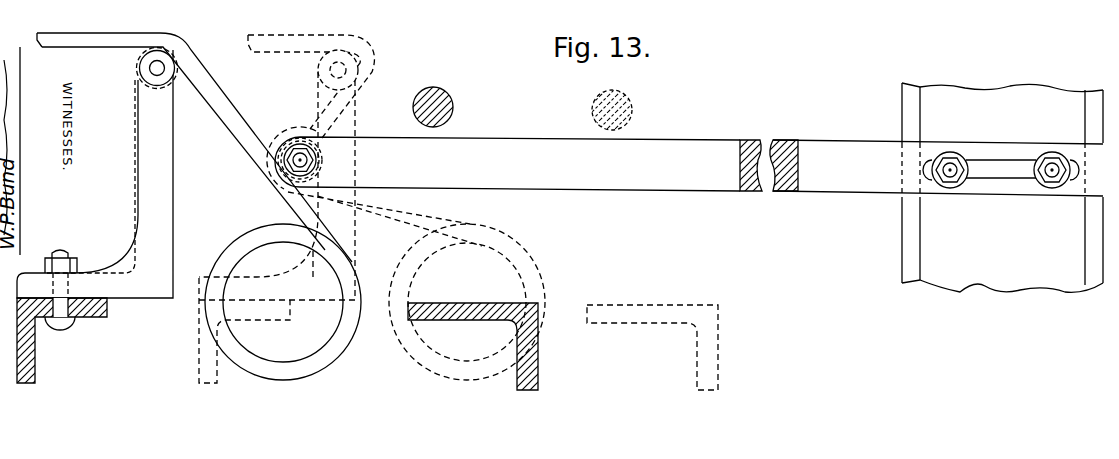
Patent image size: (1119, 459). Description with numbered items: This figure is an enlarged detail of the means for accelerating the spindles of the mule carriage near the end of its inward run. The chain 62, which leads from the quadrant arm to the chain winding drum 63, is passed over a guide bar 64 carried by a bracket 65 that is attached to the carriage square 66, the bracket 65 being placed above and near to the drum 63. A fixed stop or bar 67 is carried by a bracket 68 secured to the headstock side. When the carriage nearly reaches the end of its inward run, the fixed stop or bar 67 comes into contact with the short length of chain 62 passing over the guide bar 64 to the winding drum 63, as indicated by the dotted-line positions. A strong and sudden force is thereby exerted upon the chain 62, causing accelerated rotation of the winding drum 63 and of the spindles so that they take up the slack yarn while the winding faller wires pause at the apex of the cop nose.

The chain 62 is at (313, 117).
The chain winding drum 63 is at (246, 234).
The guide bar 64 is at (138, 71).
The bracket 65 is at (145, 173).
The carriage square 66 is at (35, 363).
The fixed stop or bar 67 is at (323, 160).
The bracket 68 is at (635, 179).